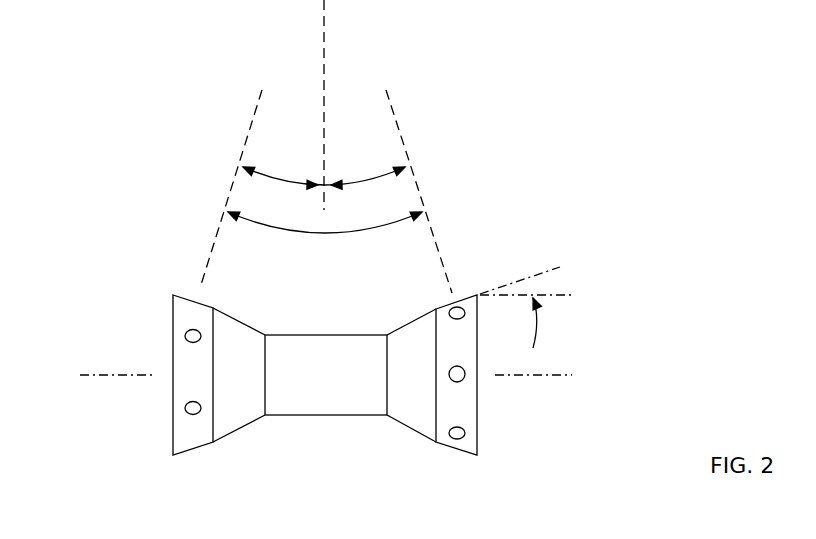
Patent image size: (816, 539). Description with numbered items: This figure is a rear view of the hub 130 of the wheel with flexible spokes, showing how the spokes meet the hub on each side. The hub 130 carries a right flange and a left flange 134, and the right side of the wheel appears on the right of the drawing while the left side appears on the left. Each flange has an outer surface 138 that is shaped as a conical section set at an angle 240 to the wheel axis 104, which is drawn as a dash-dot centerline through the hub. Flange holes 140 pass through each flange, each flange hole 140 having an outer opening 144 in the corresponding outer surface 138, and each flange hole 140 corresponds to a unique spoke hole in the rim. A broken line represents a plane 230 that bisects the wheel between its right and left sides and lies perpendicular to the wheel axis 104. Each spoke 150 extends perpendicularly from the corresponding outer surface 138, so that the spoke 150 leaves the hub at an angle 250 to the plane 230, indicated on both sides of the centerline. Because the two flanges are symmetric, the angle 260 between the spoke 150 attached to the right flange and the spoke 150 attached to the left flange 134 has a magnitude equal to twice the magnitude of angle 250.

The wheel axis 104 is at (605, 415).
The hub 130 is at (182, 168).
The left flange 134 is at (197, 445).
The outer surface 138 is at (183, 388).
The flange hole 140 is at (190, 334).
The outer opening 144 is at (458, 435).
The spoke 150 is at (415, 180).
The plane 230 is at (323, 30).
The angle 240 is at (530, 268).
The angle 250 is at (246, 165).
The angle 260 is at (272, 230).